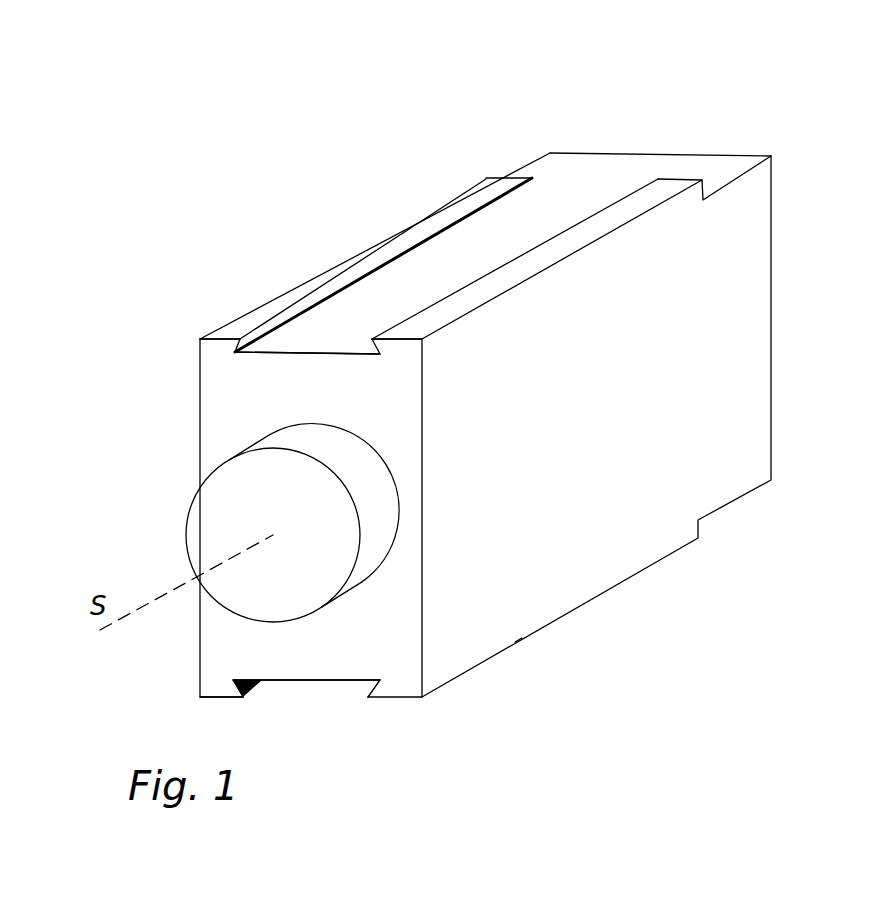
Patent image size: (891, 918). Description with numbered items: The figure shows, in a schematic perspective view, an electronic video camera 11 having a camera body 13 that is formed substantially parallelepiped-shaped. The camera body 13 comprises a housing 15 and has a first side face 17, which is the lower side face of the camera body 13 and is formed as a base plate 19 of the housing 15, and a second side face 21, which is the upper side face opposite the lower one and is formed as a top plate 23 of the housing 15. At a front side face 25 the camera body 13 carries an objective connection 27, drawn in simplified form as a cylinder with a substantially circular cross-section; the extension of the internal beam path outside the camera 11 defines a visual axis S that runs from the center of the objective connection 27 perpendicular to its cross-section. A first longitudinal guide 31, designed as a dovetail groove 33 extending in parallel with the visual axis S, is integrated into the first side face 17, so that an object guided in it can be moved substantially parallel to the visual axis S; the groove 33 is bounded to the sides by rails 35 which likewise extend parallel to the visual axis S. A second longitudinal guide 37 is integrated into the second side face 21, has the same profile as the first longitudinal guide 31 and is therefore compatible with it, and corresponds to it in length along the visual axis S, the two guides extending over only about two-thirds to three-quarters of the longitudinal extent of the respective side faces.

The electronic video camera 11 is at (268, 135).
The camera body 13 is at (500, 120).
The housing 15 is at (752, 281).
The first side face 17 is at (426, 708).
The base plate 19 is at (357, 690).
The second side face 21 is at (628, 122).
The top plate 23 is at (626, 171).
The front side face 25 is at (230, 395).
The objective connection 27 is at (377, 493).
The first longitudinal guide 31 is at (295, 718).
The dovetail groove 33 is at (325, 341).
The rails 35 is at (251, 326).
The second longitudinal guide 37 is at (346, 300).